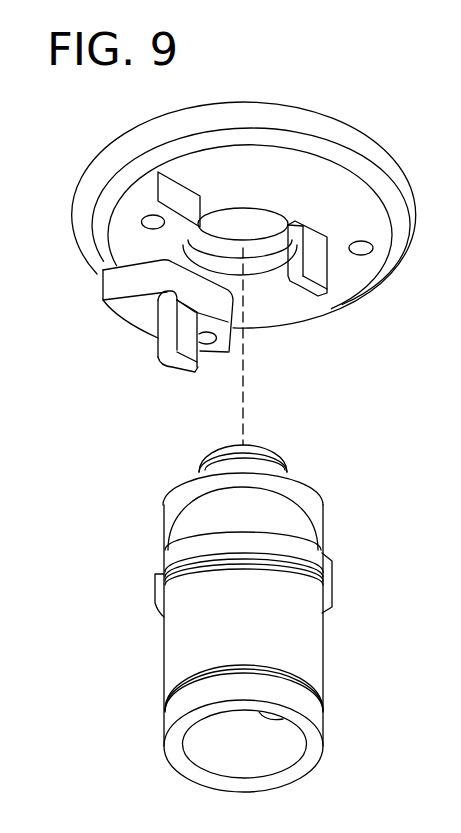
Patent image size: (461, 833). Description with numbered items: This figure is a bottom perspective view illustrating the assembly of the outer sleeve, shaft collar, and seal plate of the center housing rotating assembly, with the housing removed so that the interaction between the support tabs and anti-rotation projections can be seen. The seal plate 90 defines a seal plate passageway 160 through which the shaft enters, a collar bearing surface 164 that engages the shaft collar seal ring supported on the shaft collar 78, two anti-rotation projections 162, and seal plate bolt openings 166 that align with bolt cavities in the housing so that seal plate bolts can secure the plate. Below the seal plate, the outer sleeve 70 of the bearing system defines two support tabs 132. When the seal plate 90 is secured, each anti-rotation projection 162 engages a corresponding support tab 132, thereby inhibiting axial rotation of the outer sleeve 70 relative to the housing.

The seal plate 90 is at (375, 126).
The seal plate passageway 160 is at (238, 221).
The collar bearing surface 164 is at (252, 243).
The anti-rotation projection 162 is at (317, 295).
The seal plate bolt opening 166 is at (149, 229).
The shaft collar 78 is at (300, 484).
The outer sleeve 70 is at (308, 657).
The support tab 132 is at (333, 574).